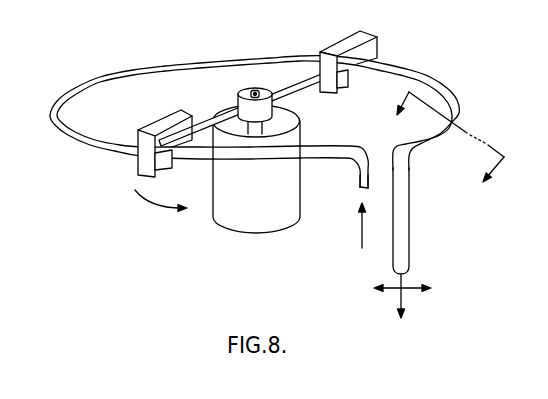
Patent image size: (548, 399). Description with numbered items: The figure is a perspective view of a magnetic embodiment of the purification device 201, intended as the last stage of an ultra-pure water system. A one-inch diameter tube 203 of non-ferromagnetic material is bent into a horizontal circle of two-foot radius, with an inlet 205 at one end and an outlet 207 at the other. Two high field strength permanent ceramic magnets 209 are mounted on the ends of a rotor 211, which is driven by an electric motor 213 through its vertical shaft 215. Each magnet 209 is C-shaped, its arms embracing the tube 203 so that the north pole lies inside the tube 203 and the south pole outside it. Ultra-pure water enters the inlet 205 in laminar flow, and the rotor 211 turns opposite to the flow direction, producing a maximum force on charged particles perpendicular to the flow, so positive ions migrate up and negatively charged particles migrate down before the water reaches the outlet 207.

The device 201 is at (213, 57).
The tube 203 is at (248, 60).
The inlet 205 is at (360, 189).
The outlet 207 is at (412, 162).
The permanent ceramic magnets 209 is at (136, 168).
The rotor 211 is at (240, 98).
The electric motor 213 is at (245, 222).
The vertical shaft 215 is at (292, 112).